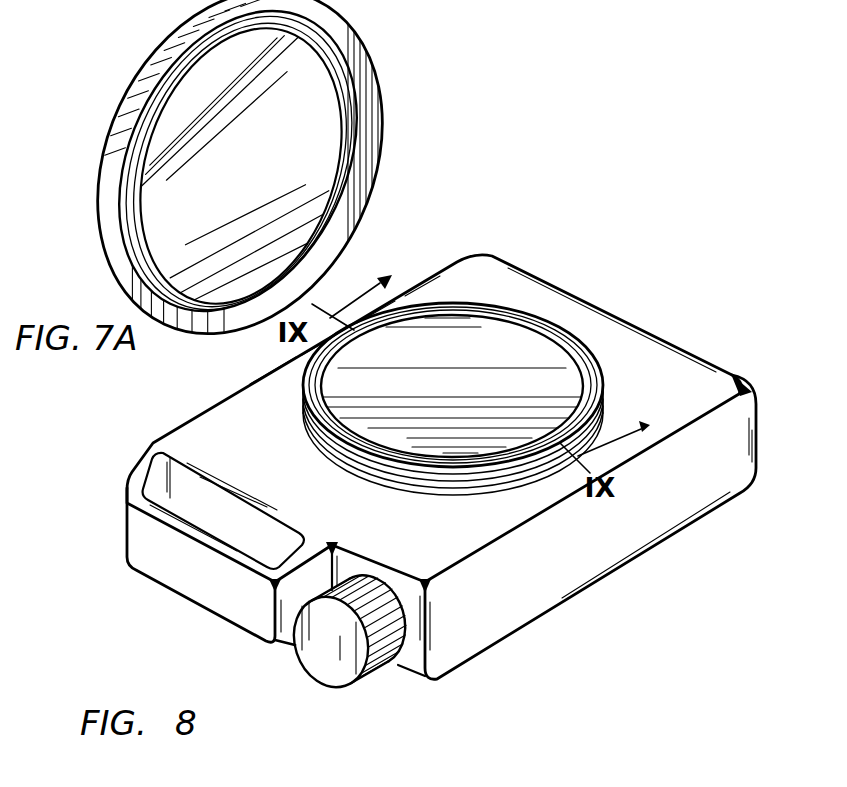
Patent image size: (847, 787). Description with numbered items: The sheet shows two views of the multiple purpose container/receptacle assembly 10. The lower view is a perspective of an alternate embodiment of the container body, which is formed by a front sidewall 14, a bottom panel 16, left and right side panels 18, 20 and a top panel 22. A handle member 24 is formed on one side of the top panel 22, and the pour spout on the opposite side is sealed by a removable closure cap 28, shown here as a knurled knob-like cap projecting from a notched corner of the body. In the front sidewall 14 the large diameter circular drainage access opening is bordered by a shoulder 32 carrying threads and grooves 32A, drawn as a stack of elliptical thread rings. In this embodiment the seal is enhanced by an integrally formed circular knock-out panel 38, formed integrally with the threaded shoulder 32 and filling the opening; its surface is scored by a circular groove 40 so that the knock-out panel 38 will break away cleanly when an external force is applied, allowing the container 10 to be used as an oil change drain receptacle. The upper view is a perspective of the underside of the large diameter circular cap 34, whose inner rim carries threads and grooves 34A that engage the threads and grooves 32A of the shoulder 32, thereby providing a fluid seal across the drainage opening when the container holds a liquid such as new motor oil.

In FIG. 8, the multiple purpose container/receptacle assembly 10 is at (580, 273).
In FIG. 8, the front sidewall 14 is at (463, 522).
In FIG. 8, the bottom panel 16 is at (658, 341).
In FIG. 8, the left side panel 18 is at (633, 528).
In FIG. 8, the right side panel 20 is at (418, 282).
In FIG. 8, the top panel 22 is at (250, 533).
In FIG. 8, the handle member 24 is at (152, 562).
In FIG. 8, the removable closure cap 28 is at (380, 696).
In FIG. 8, the shoulder 32 is at (597, 387).
In FIG. 8, the threads and grooves 32A is at (333, 454).
In FIG. 7A, the circular cap 34 is at (104, 114).
In FIG. 7A, the threads and grooves 34A is at (350, 116).
In FIG. 8, the knock-out panel 38 is at (557, 386).
In FIG. 8, the circular groove 40 is at (304, 386).